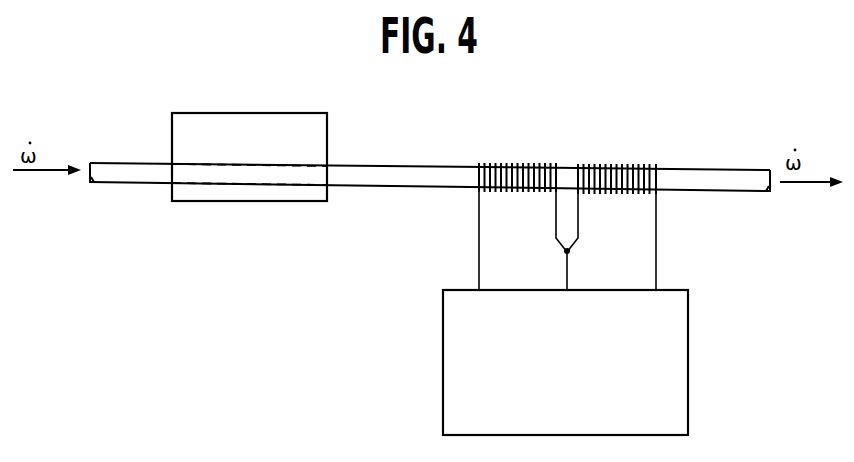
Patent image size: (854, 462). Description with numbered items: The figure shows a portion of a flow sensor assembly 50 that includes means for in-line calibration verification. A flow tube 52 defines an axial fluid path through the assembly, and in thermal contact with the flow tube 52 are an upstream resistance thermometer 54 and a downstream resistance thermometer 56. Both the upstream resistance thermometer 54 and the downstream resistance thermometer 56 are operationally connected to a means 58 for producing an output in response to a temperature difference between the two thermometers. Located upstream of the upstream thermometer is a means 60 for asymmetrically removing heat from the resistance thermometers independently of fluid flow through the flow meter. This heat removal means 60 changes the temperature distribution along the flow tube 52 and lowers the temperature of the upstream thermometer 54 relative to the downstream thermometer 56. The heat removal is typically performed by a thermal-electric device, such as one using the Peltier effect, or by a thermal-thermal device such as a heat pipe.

The flow sensor assembly 50 is at (150, 80).
The flow tube 52 is at (373, 178).
The upstream resistance thermometer 54 is at (511, 163).
The downstream resistance thermometer 56 is at (620, 166).
The means for producing an output 58 is at (443, 318).
The means for asymmetrically removing heat 60 is at (230, 194).